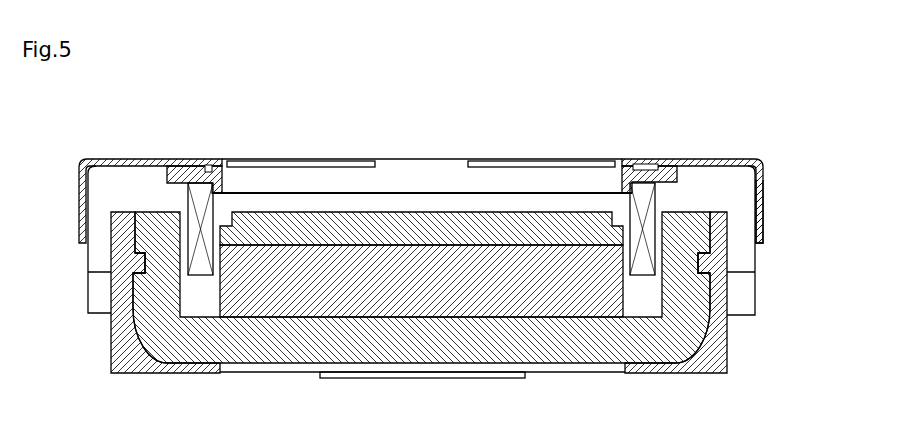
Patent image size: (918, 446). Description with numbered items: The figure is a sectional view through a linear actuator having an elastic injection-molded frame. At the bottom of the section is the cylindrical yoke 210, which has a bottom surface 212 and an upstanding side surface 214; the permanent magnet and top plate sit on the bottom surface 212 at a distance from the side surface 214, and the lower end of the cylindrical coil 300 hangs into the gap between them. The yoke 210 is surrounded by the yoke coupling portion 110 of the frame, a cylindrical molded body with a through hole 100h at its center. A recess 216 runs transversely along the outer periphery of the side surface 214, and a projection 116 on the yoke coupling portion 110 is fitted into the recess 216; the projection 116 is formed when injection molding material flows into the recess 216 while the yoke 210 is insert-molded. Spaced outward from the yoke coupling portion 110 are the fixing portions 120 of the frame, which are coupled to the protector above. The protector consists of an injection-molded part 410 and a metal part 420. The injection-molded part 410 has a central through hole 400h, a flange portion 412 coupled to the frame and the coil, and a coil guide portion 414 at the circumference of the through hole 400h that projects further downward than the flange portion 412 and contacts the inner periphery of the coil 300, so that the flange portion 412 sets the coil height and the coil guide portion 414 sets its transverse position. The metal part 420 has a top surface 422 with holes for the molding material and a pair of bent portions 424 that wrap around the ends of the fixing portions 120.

The through hole 100h is at (300, 369).
The yoke coupling portion 110 is at (690, 375).
The projection 116 is at (690, 270).
The fixing portion 120 is at (750, 250).
The yoke 210 is at (482, 319).
The bottom surface 212 is at (569, 350).
The side surface 214 is at (708, 298).
The recess 216 is at (147, 266).
The coil 300 is at (217, 203).
The through hole 400h is at (431, 183).
The injection-molded part 410 is at (167, 175).
The flange portion 412 is at (658, 167).
The coil guide portion 414 is at (620, 192).
The metal part 420 is at (461, 173).
The top surface 422 is at (703, 160).
The bent portion 424 is at (766, 216).